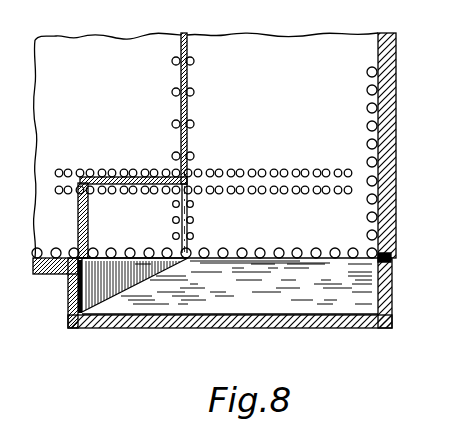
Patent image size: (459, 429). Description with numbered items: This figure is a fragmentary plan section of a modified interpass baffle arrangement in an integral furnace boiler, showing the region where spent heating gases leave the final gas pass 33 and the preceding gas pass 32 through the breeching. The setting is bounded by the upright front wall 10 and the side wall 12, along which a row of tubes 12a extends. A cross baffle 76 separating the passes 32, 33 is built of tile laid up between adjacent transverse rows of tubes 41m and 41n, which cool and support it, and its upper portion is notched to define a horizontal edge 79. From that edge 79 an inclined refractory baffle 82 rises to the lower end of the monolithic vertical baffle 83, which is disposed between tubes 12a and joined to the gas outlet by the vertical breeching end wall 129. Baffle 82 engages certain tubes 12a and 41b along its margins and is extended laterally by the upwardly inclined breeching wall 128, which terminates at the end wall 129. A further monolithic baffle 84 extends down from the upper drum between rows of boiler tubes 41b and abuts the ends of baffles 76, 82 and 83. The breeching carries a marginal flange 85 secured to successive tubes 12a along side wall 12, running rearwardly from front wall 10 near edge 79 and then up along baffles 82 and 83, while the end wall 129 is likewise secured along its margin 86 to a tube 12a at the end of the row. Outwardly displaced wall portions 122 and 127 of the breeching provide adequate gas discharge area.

The front wall 10 is at (392, 129).
The side wall 12 is at (50, 274).
The tubes 12a is at (316, 249).
The gas pass 32 is at (113, 120).
The final gas pass 33 is at (288, 138).
The boiler tubes 41b is at (144, 194).
The tubes 41m is at (173, 207).
The tubes 41n is at (194, 205).
The cross baffle 76 is at (188, 87).
The horizontal edge 79 is at (194, 232).
The inclined baffle 82 is at (132, 242).
The vertical baffle 83 is at (79, 225).
The monolithic baffle 84 is at (118, 177).
The marginal flange 85 is at (68, 298).
The margin 86 is at (382, 254).
The outwardly displaced wall portion 122 is at (250, 295).
The outwardly displaced wall portion 127 is at (284, 312).
The inclined breeching wall 128 is at (125, 284).
The breeching end wall 129 is at (72, 316).